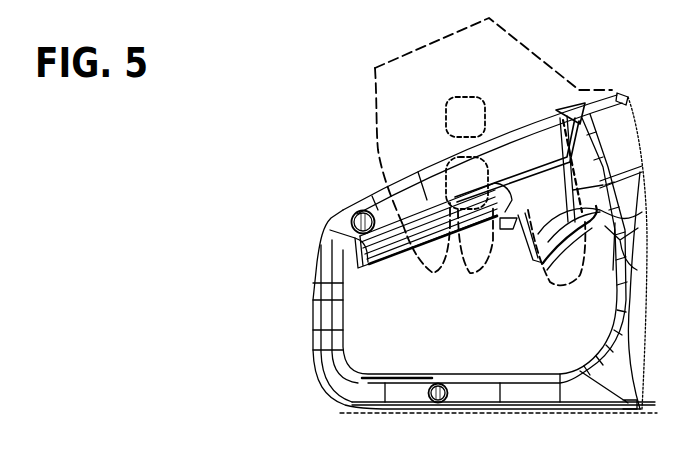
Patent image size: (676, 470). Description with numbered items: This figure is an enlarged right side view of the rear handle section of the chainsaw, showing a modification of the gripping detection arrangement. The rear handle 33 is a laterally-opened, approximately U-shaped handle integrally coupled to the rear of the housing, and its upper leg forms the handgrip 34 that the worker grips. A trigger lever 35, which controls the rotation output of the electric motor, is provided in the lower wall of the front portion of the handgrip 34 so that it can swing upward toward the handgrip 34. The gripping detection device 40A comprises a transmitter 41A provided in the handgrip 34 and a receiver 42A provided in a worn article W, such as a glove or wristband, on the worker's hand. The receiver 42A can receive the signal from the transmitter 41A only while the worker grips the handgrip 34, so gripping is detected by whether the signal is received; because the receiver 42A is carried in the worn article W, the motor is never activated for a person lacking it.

The rear handle 33 is at (330, 200).
The handgrip 34 is at (378, 207).
The trigger lever 35 is at (542, 268).
The gripping detection device 40A is at (567, 72).
The transmitter 41A is at (452, 252).
The receiver 42A is at (443, 108).
The worn article W is at (372, 127).